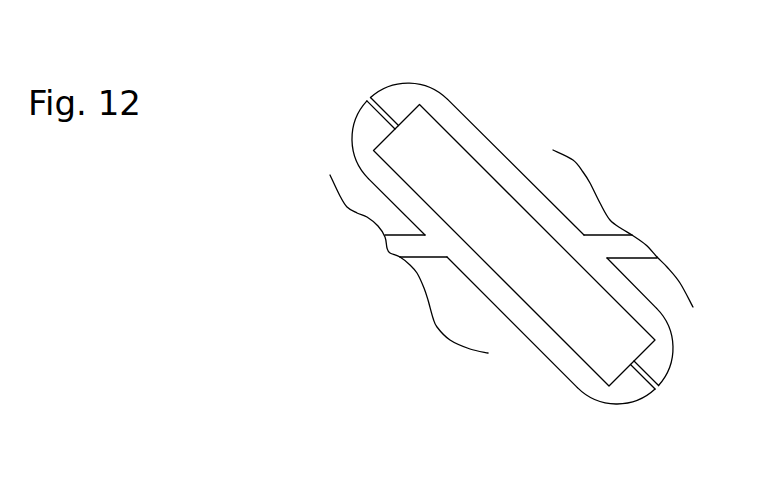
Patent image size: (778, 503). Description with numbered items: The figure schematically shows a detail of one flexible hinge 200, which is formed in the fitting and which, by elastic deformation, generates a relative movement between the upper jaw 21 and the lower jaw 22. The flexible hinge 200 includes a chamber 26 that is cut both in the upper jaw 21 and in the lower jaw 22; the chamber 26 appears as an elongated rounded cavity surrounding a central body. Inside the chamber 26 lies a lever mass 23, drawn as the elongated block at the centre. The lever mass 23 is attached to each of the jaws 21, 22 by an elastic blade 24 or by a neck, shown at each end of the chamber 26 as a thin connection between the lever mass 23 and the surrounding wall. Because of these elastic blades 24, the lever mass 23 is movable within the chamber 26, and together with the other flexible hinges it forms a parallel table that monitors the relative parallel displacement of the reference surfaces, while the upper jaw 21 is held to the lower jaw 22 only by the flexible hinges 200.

The flexible hinge 200 is at (584, 132).
The upper jaw 21 is at (370, 210).
The lower jaw 22 is at (448, 300).
The lever mass 23 is at (425, 147).
The elastic blade 24 is at (391, 124).
The chamber 26 is at (490, 153).